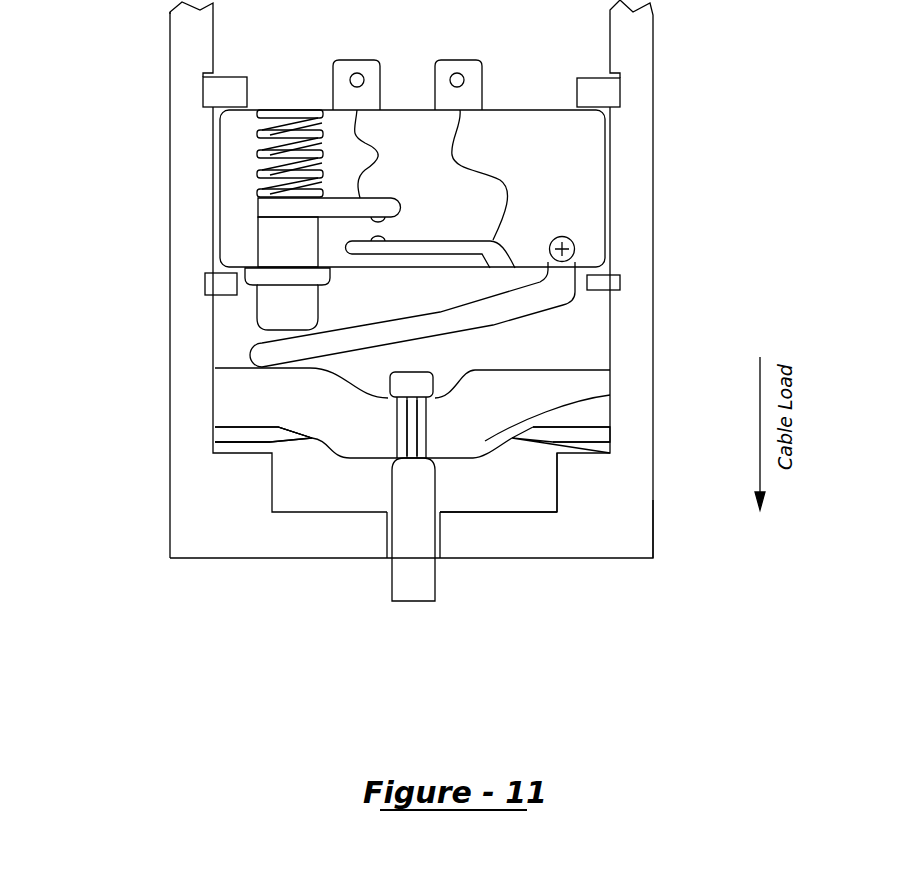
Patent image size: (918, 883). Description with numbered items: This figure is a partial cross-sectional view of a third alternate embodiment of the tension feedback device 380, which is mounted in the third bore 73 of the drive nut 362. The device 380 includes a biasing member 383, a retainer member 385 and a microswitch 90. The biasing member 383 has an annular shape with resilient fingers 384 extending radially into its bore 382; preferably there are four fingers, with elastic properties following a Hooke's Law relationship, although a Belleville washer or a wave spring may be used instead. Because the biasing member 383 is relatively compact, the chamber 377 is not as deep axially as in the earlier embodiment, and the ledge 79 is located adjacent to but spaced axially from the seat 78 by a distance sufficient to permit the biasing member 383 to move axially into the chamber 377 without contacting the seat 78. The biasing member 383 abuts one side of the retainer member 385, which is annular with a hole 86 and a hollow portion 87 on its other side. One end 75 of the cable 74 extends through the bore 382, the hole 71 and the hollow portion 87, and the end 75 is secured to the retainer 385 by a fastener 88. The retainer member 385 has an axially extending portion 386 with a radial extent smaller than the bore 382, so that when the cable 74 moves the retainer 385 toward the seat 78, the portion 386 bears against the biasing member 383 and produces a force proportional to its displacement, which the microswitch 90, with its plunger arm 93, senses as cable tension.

The small aperture 71 is at (387, 530).
The third bore 73 is at (608, 327).
The cable 74 is at (430, 534).
The one end of cable 75 is at (428, 413).
The seat 78 is at (513, 513).
The ledge 79 is at (600, 455).
The hole 86 is at (419, 436).
The hollow portion 87 is at (462, 394).
The fastener member 88 is at (410, 387).
The limit switch 90 is at (519, 242).
The plunger arm 93 is at (445, 310).
The drive nut 362 is at (653, 523).
The chamber 377 is at (557, 503).
The tension feedback device 380 is at (633, 278).
The bore 382 is at (404, 427).
The biasing member 383 is at (232, 447).
The resilient fingers 384 is at (298, 445).
The retainer member 385 is at (240, 393).
The axially extending portion 386 is at (610, 395).